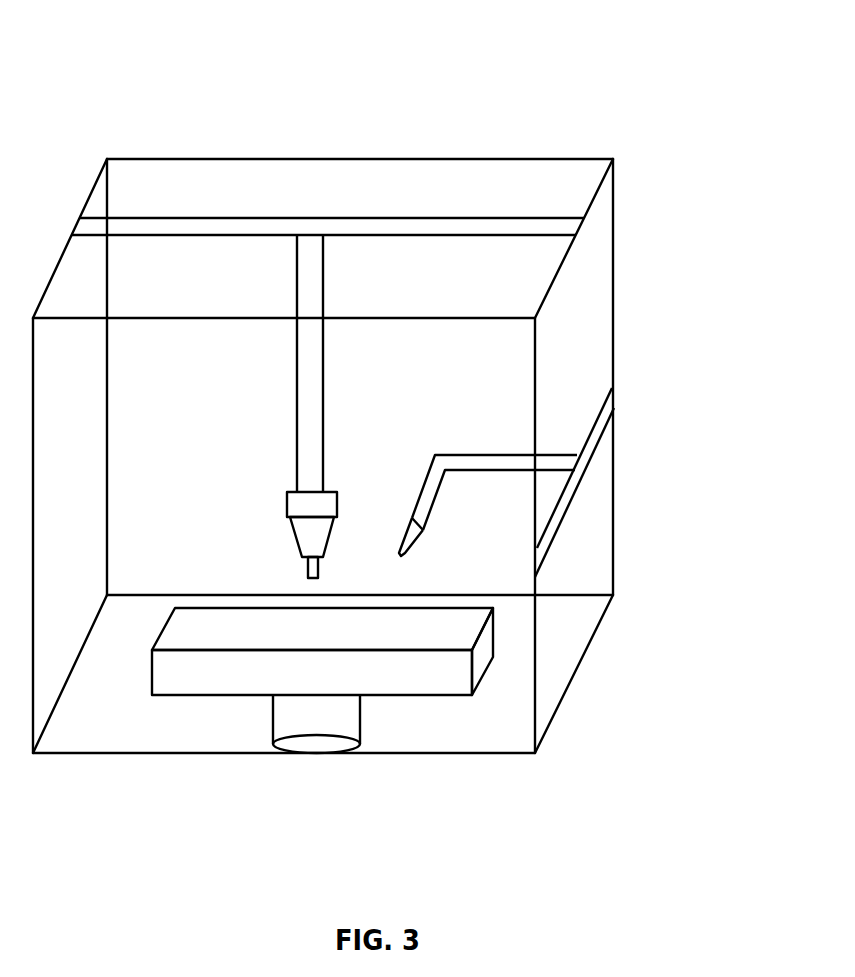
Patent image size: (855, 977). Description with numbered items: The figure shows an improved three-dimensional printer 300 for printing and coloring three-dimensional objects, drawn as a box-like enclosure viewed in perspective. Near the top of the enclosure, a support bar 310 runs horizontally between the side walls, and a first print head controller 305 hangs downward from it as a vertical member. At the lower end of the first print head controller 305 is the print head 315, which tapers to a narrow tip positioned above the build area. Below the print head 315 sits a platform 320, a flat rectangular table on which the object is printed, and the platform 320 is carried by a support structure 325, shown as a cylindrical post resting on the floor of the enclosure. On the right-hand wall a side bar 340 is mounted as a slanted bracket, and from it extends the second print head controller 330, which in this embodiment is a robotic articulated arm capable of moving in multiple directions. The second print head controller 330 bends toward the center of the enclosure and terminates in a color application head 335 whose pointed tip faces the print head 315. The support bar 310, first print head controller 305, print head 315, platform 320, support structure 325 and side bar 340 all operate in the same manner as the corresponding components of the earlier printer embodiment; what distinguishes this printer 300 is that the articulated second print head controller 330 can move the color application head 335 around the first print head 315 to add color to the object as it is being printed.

The 3D printer 300 is at (572, 82).
The first print head controller 305 is at (321, 393).
The support bar 310 is at (546, 218).
The print head 315 is at (308, 572).
The platform 320 is at (152, 680).
The support structure 325 is at (363, 732).
The second print head controller 330 is at (437, 494).
The color application head 335 is at (404, 551).
The side bar 340 is at (580, 460).